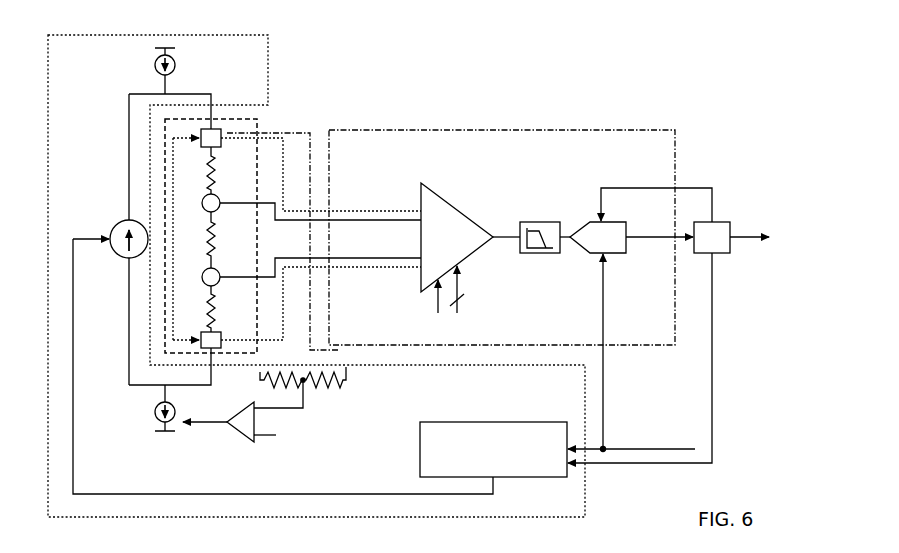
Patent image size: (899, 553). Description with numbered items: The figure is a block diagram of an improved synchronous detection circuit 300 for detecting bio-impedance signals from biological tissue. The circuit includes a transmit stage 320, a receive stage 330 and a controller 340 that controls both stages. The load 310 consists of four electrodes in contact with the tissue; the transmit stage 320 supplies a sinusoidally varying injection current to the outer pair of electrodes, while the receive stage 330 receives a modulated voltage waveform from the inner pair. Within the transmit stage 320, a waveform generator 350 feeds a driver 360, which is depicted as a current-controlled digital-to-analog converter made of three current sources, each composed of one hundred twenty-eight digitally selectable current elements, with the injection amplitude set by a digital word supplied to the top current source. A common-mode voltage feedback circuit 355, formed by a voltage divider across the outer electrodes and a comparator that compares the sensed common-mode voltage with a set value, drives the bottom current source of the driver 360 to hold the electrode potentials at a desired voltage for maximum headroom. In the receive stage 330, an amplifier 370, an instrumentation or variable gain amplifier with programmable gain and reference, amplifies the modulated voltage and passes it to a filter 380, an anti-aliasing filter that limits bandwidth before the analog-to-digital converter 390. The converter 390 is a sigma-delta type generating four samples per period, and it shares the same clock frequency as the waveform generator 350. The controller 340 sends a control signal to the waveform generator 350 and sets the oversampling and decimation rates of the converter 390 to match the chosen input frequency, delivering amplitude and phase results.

The synchronous detection circuit 300 is at (627, 54).
The load 310 is at (254, 124).
The transmit stage 320 is at (316, 263).
The receive stage 330 is at (417, 128).
The controller 340 is at (718, 221).
The waveform generator 350 is at (493, 449).
The common-mode voltage feedback circuit 355 is at (321, 411).
The driver 360 is at (115, 172).
The amplifier 370 is at (433, 190).
The filter 380 is at (543, 254).
The analog-to-digital converter 390 is at (591, 255).